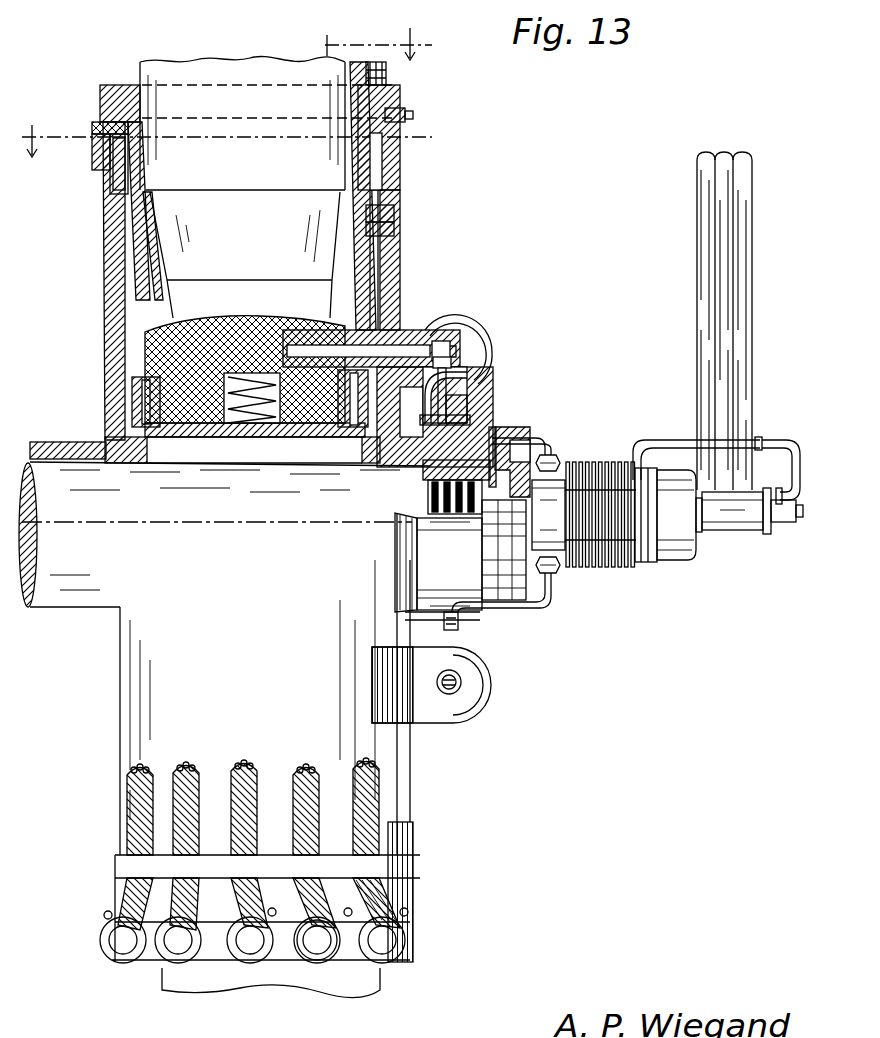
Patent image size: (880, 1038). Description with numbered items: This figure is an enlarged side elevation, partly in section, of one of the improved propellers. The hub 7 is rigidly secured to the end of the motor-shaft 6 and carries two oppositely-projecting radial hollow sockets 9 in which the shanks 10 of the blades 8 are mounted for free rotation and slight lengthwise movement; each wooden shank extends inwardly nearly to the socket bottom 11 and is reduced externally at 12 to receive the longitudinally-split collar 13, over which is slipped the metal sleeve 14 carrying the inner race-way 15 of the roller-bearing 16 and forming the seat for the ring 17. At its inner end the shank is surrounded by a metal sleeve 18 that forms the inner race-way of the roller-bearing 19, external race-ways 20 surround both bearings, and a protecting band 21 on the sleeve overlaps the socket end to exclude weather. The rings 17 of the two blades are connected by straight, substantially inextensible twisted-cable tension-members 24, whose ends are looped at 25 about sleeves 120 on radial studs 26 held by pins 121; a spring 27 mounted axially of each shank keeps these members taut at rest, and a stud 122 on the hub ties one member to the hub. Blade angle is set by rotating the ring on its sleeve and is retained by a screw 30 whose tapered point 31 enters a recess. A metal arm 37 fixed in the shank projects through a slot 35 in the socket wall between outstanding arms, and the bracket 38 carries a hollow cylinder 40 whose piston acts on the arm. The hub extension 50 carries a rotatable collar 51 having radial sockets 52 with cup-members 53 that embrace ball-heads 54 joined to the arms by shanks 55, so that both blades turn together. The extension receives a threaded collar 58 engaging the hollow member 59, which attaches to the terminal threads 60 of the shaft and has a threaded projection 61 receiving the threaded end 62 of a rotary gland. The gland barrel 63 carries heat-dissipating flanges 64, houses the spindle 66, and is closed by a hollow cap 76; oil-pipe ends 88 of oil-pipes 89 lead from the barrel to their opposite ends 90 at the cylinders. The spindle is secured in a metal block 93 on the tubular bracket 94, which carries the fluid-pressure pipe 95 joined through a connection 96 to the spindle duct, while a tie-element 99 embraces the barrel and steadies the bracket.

The motor-shaft 6 is at (27, 462).
The hub 7 is at (78, 442).
The blades 8 is at (142, 60).
The sockets 9 is at (103, 266).
The shanks 10 is at (208, 447).
The bottom of the socket 11 is at (178, 437).
The reduced portion 12 is at (245, 255).
The longitudinally-split collar 13 is at (160, 275).
The metal sleeve 14 is at (362, 276).
The inner race-way 15 is at (142, 178).
The roller-bearing 16 is at (118, 182).
The ring 17 is at (114, 85).
The metal sleeve 18 is at (330, 427).
The roller-bearing 19 is at (352, 428).
The external race-ways 20 is at (108, 400).
The protecting band 21 is at (402, 148).
The tension-members 24 is at (230, 809).
The looped ends 25 is at (348, 965).
The studs 26 is at (392, 952).
The spring 27 is at (283, 425).
The screw 30 is at (386, 74).
The tapered point 31 is at (394, 118).
The slot 35 is at (418, 330).
The arm 37 is at (447, 338).
The bracket 38 is at (433, 318).
The hollow cylinder 40 is at (484, 332).
The extension 50 is at (402, 560).
The collar 51 is at (464, 566).
The radial sockets 52 is at (470, 414).
The cup-members 53 is at (468, 400).
The ball-heads 54 is at (466, 388).
The shanks 55 is at (456, 380).
The threaded collar 58 is at (517, 445).
The hollow member 59 is at (424, 476).
The terminal threads 60 is at (428, 502).
The internally threaded projection 61 is at (508, 550).
The threaded end 62 is at (512, 462).
The barrel 63 is at (548, 515).
The external flanges 64 is at (603, 560).
The spindle 66 is at (699, 534).
The hollow cap 76 is at (673, 560).
The ends of oil-pipes 88 is at (560, 458).
The oil-pipes 89 is at (554, 433).
The opposite ends 90 is at (444, 626).
The metal block 93 is at (742, 530).
The bracket 94 is at (752, 291).
The fluid-pressure pipe 95 is at (800, 456).
The connection 96 is at (784, 522).
The tie-element 99 is at (672, 440).
The sleeves 120 is at (396, 214).
The pins 121 is at (313, 968).
The stud 122 is at (396, 230).